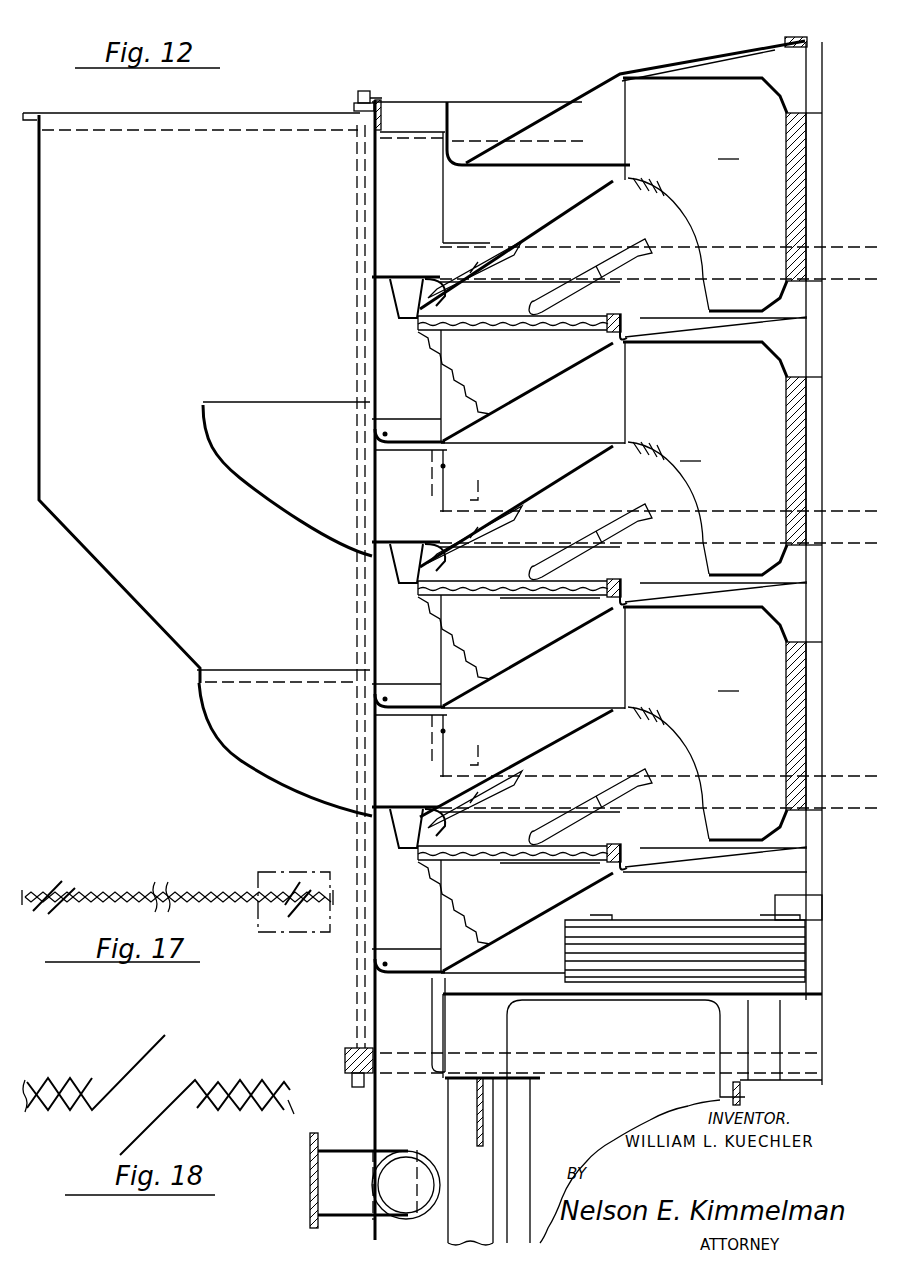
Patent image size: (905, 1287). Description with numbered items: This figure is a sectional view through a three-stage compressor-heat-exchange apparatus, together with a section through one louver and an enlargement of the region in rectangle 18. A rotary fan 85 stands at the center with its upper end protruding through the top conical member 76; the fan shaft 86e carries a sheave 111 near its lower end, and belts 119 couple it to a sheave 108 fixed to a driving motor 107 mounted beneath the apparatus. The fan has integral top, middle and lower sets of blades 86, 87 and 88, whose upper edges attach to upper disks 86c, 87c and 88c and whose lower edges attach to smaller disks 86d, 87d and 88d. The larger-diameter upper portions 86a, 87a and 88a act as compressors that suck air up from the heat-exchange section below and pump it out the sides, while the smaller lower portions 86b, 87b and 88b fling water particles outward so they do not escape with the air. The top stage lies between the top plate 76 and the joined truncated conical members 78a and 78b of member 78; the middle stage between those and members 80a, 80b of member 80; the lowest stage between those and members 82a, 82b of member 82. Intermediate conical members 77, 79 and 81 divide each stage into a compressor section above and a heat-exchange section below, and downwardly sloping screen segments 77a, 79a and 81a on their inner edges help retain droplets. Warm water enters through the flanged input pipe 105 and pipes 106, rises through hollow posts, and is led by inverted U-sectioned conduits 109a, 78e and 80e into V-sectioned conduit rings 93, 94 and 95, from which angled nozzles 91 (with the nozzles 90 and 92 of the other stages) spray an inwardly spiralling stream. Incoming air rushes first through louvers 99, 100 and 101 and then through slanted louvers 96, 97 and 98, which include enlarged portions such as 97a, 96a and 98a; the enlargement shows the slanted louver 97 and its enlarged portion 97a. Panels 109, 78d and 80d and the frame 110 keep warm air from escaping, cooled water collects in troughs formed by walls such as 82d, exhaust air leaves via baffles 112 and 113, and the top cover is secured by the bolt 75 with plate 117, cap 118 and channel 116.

In FIG. 12, the bolt 75 is at (355, 100).
In FIG. 12, the top conical member 76 is at (600, 88).
In FIG. 12, the intermediate conical member 77 is at (578, 200).
In FIG. 12, the annular screen segment 77a is at (650, 196).
In FIG. 12, the member 78 is at (500, 399).
In FIG. 12, the truncated conical member 78a is at (582, 368).
In FIG. 12, the truncated conical member 78b is at (628, 325).
In FIG. 12, the upstanding edge portion 78d is at (430, 492).
In FIG. 12, the input conduit 78e is at (472, 481).
In FIG. 12, the intermediate conical member 79 is at (540, 486).
In FIG. 12, the annular screen segment 79a is at (634, 455).
In FIG. 12, the member 80 is at (506, 664).
In FIG. 12, the truncated conical member 80a is at (542, 649).
In FIG. 12, the truncated conical member 80b is at (640, 598).
In FIG. 12, the panel portion 80d is at (430, 760).
In FIG. 12, the bracket tab 80e is at (477, 751).
In FIG. 12, the intermediate conical member 81 is at (576, 742).
In FIG. 12, the annular screen segment 81a is at (640, 723).
In FIG. 12, the lower tray unit 82 is at (507, 949).
In FIG. 12, the truncated conical member 82a is at (582, 890).
In FIG. 12, the truncated conical member 82b is at (643, 870).
In FIG. 12, the trough wall 82d is at (431, 1022).
In FIG. 12, the rotary fan 85 is at (797, 150).
In FIG. 12, the top set of fan blades 86 is at (660, 210).
In FIG. 12, the upper blade portion 86a is at (648, 143).
In FIG. 12, the lower blade portion 86b is at (708, 232).
In FIG. 12, the upper disk 86c is at (707, 80).
In FIG. 12, the lower disk 86d is at (708, 299).
In FIG. 12, the fan shaft 86e is at (816, 213).
In FIG. 12, the middle set of fan blades 87 is at (660, 450).
In FIG. 12, the upper blade portion 87a is at (645, 379).
In FIG. 12, the lower blade portion 87b is at (700, 494).
In FIG. 12, the upper disk 87c is at (673, 346).
In FIG. 12, the lower disk 87d is at (710, 574).
In FIG. 12, the lower set of fan blades 88 is at (660, 724).
In FIG. 12, the upper blade portion 88a is at (648, 645).
In FIG. 12, the lower blade portion 88b is at (706, 759).
In FIG. 12, the upper disk 88c is at (704, 610).
In FIG. 12, the lower disk 88d is at (710, 832).
In FIG. 12, the spray nozzle 90 is at (592, 263).
In FIG. 12, the nozzle 91 is at (602, 530).
In FIG. 12, the spray nozzle 92 is at (606, 794).
In FIG. 12, the conduit ring 93 is at (394, 300).
In FIG. 12, the conduit ring 94 is at (400, 584).
In FIG. 12, the feed funnel 95 is at (403, 851).
In FIG. 12, the annular louver member 96 is at (507, 340).
In FIG. 12, the screen hook 96a is at (510, 318).
In FIG. 12, the annular louver member 97 is at (528, 591).
In FIG. 17, the annular louver member 97 is at (127, 897).
In FIG. 18, the annular louver member 97 is at (70, 1077).
In FIG. 12, the enlarged portion 97a is at (581, 597).
In FIG. 17, the enlarged portion 97a is at (306, 884).
In FIG. 18, the enlarged portion 97a is at (148, 1078).
In FIG. 12, the annular louver member 98 is at (500, 864).
In FIG. 12, the screen flange 98a is at (518, 862).
In FIG. 12, the annular louver member 99 is at (453, 380).
In FIG. 12, the annular louver member 100 is at (430, 622).
In FIG. 12, the annular louver member 101 is at (432, 882).
In FIG. 12, the flanged input pipe 105 is at (349, 1150).
In FIG. 12, the pipe 106 is at (378, 1180).
In FIG. 12, the driving motor 107 is at (596, 1109).
In FIG. 12, the sheave 108 is at (632, 920).
In FIG. 12, the wall 109 is at (381, 221).
In FIG. 12, the input conduit 109a is at (472, 242).
In FIG. 12, the housing frame 110 is at (372, 359).
In FIG. 12, the sheave 111 is at (792, 908).
In FIG. 12, the baffle 112 is at (222, 466).
In FIG. 12, the baffle 113 is at (43, 350).
In FIG. 12, the channel member 116 is at (449, 108).
In FIG. 12, the cover plate 117 is at (421, 118).
In FIG. 12, the wall cap 118 is at (381, 101).
In FIG. 12, the belt 119 is at (698, 945).
In FIG. 17, the rectangle 18 is at (250, 868).